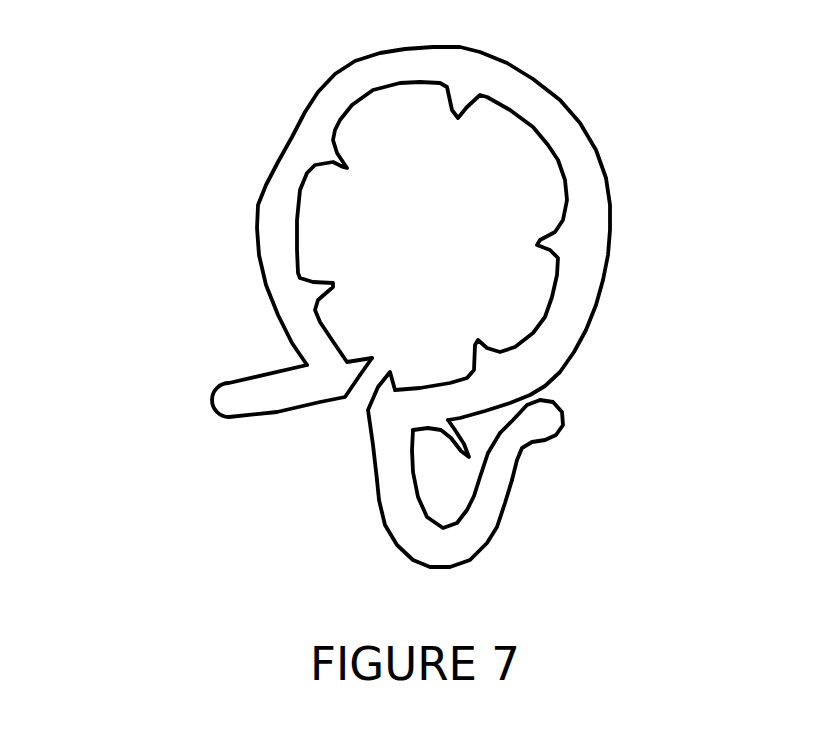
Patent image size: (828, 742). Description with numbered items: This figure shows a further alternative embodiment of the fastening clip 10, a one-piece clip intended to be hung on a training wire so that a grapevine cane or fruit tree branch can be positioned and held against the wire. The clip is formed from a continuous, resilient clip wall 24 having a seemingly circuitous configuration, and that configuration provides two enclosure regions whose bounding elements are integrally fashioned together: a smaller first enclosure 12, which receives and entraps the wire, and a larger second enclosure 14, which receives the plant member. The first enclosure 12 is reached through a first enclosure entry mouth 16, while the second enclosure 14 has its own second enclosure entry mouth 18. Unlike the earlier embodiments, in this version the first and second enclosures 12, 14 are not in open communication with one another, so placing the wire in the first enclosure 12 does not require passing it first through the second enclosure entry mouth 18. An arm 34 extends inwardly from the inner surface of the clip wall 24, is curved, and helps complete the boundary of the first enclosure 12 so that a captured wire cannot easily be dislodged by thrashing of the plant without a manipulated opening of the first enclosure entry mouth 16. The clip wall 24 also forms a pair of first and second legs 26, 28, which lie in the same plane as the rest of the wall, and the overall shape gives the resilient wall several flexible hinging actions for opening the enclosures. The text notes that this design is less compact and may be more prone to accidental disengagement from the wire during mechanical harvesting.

The fastening clip 10 is at (122, 153).
The first enclosure 12 is at (448, 485).
The second enclosure 14 is at (360, 217).
The first enclosure entry mouth 16 is at (565, 385).
The second enclosure entry mouth 18 is at (350, 410).
The clip wall 24 is at (315, 132).
The first leg 26 is at (383, 502).
The second leg 28 is at (250, 403).
The arm 34 is at (448, 437).